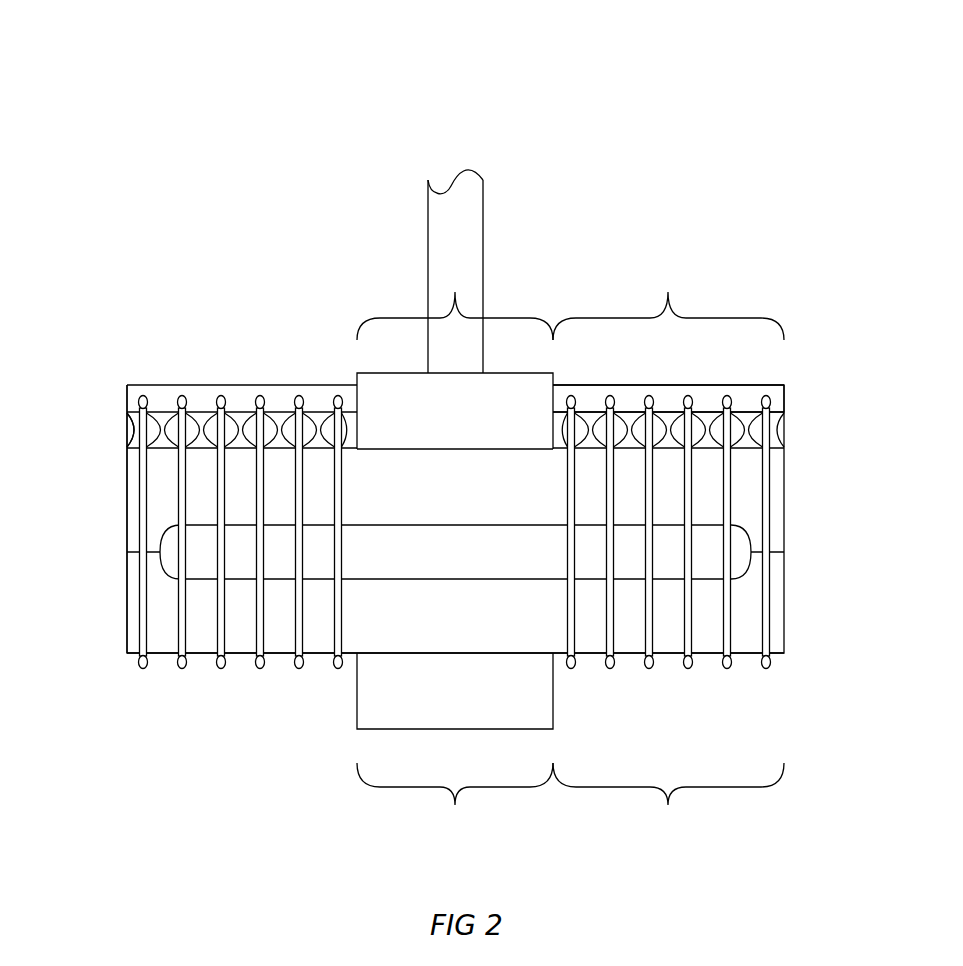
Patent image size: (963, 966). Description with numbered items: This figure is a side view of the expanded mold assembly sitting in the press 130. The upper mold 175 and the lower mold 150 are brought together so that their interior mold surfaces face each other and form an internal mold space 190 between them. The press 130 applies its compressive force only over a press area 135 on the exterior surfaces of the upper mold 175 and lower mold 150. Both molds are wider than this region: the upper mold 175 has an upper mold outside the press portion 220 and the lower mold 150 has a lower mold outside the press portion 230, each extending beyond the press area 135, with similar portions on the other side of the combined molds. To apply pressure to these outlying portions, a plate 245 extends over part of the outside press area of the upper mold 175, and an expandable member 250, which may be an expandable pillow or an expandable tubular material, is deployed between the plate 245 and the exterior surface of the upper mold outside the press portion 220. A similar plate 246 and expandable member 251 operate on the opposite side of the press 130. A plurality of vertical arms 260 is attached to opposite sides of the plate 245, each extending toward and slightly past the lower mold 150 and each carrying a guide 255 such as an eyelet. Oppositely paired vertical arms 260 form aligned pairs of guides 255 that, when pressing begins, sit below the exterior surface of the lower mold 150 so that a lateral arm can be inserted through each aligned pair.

The press 130 is at (270, 145).
The press area 135 is at (455, 506).
The lower mold 150 is at (127, 638).
The upper mold 175 is at (127, 492).
The internal mold space 190 is at (369, 544).
The upper mold outside the press portion 220 is at (668, 302).
The lower mold outside the press portion 230 is at (668, 802).
The plate 245 is at (780, 400).
The plate 246 is at (200, 385).
The expandable member 250 is at (778, 432).
The expandable member 251 is at (127, 427).
The guide 255 is at (767, 668).
The vertical arms 260 is at (143, 612).